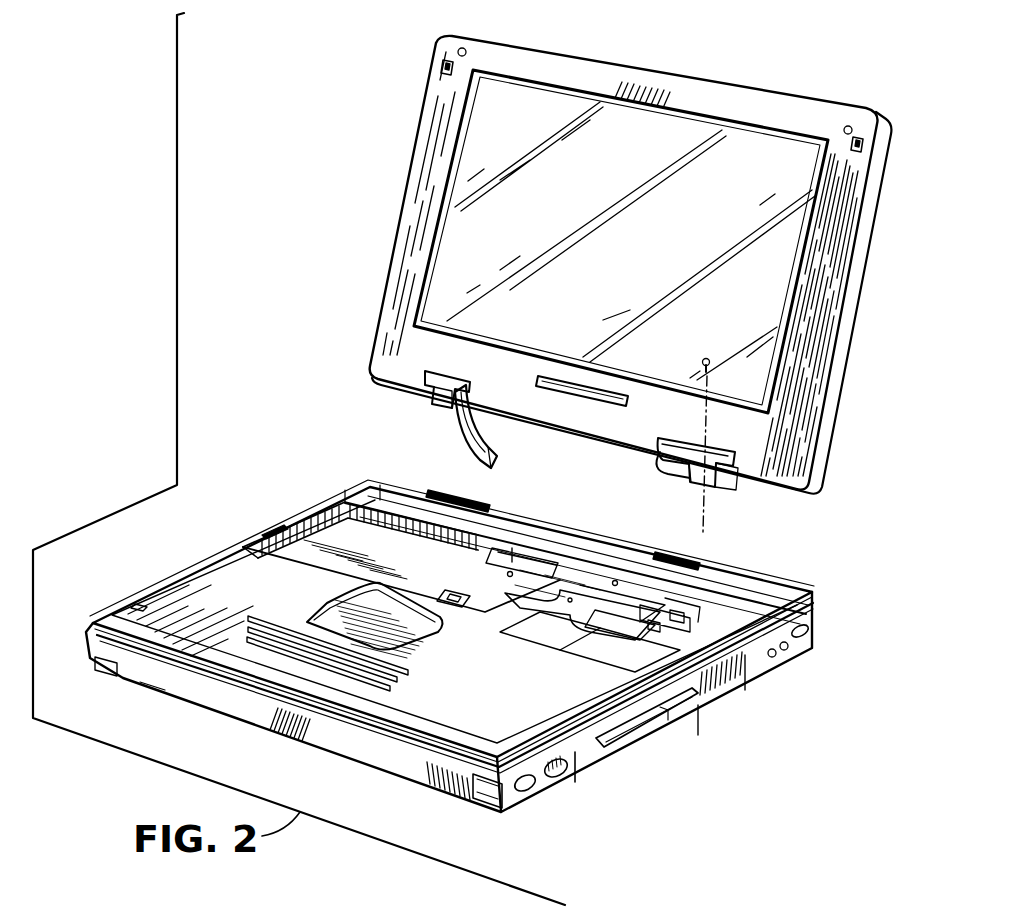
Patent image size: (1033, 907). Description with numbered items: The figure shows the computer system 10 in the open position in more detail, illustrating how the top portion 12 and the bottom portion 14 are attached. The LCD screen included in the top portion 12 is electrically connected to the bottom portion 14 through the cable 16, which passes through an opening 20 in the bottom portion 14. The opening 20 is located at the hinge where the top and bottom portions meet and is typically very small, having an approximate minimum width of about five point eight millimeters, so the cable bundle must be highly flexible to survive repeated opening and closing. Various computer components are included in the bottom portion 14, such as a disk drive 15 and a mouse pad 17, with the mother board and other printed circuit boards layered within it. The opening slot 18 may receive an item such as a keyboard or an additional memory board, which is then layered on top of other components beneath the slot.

The computer system 10 is at (318, 378).
The top portion 12 is at (410, 190).
The bottom portion 14 is at (598, 750).
The disk drive 15 is at (690, 694).
The cable 16 is at (502, 456).
The mouse pad 17 is at (338, 617).
The opening slot 18 is at (352, 545).
The opening 20 is at (478, 504).